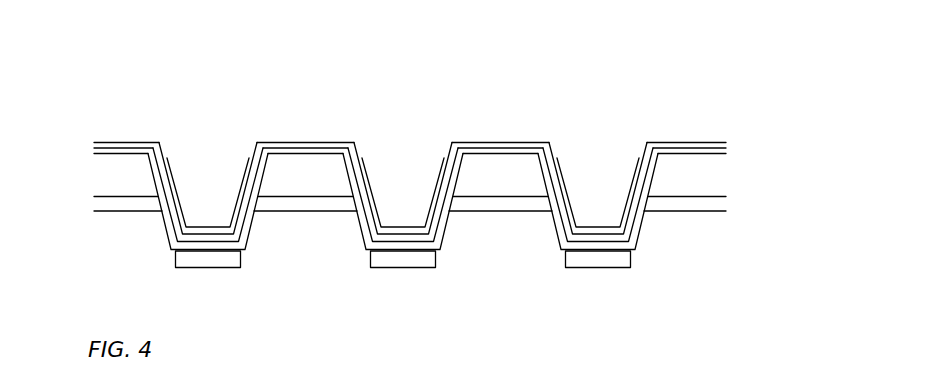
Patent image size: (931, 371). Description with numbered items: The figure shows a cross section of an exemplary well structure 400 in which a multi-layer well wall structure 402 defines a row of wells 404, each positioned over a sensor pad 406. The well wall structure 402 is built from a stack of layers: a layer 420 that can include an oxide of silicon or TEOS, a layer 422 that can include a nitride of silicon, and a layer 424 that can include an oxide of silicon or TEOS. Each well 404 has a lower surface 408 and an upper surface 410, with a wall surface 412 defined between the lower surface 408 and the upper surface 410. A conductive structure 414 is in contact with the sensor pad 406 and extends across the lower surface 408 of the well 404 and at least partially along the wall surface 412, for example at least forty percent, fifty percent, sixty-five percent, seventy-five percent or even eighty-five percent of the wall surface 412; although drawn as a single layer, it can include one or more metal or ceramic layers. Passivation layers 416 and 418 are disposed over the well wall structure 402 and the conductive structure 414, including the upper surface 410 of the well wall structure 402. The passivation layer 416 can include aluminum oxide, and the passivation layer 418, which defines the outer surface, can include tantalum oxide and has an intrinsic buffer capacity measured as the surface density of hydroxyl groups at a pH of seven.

The semiconductor device / trench capacitor structure 400 is at (569, 70).
The well wall structure 402 is at (256, 167).
The well 404 is at (403, 158).
The sensor pad 406 is at (208, 268).
The lower surface 408 is at (391, 226).
The upper surface 410 is at (307, 147).
The wall surface 412 is at (368, 184).
The conductive structure 414 is at (243, 244).
The passivation layer 416 is at (145, 152).
The passivation layer 418 is at (153, 147).
The layer 420 is at (723, 228).
The layer 422 is at (718, 202).
The layer 424 is at (718, 165).